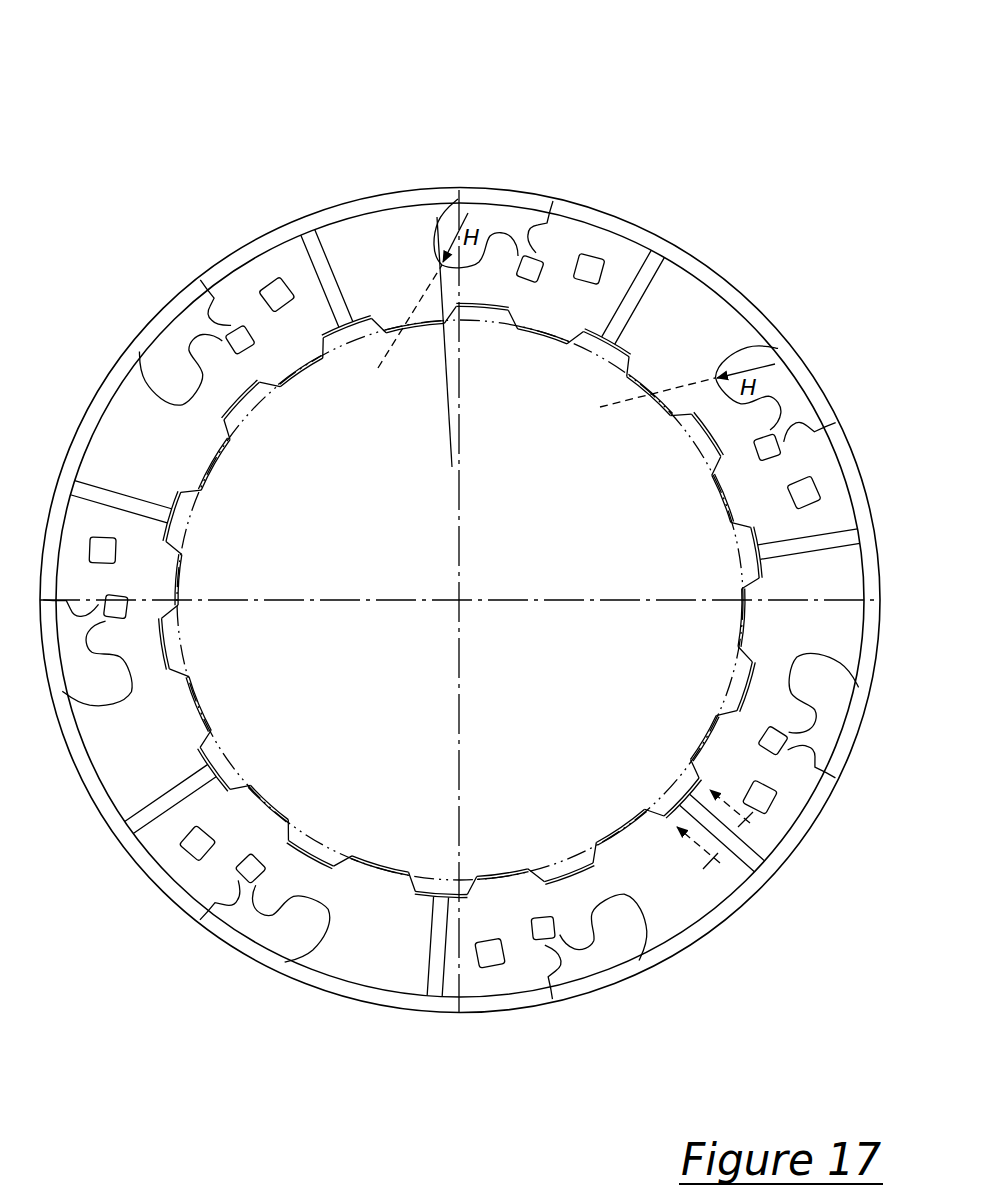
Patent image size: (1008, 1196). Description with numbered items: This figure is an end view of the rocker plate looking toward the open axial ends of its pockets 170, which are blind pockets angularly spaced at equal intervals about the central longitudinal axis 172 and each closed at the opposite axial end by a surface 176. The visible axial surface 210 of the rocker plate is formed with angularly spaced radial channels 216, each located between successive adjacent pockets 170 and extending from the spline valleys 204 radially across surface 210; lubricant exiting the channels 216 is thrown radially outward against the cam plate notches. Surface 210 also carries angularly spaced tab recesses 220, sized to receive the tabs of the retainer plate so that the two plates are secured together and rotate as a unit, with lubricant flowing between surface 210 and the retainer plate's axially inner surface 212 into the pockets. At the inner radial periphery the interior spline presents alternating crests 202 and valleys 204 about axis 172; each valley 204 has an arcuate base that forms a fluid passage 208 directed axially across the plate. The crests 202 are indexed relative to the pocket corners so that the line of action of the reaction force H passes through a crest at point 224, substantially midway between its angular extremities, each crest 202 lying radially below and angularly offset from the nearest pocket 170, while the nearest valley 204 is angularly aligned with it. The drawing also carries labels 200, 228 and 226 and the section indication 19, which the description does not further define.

The surface 176 is at (150, 155).
The pocket 170 is at (172, 360).
The central longitudinal axis 172 is at (458, 598).
The radial channel 216 is at (318, 240).
The tab recess 220 is at (272, 283).
The rocker plate surface 210 is at (852, 588).
The axially inner surface of the retainer plate 212 is at (778, 618).
The inner boundary 200 is at (732, 633).
The spline crest 202 is at (433, 322).
The spline valley 204 is at (745, 684).
The fluid passage 208 is at (668, 793).
The top arc segment 228 is at (458, 323).
The point 224 is at (522, 338).
The skew line 226 is at (432, 425).
The section line 19 is at (726, 840).